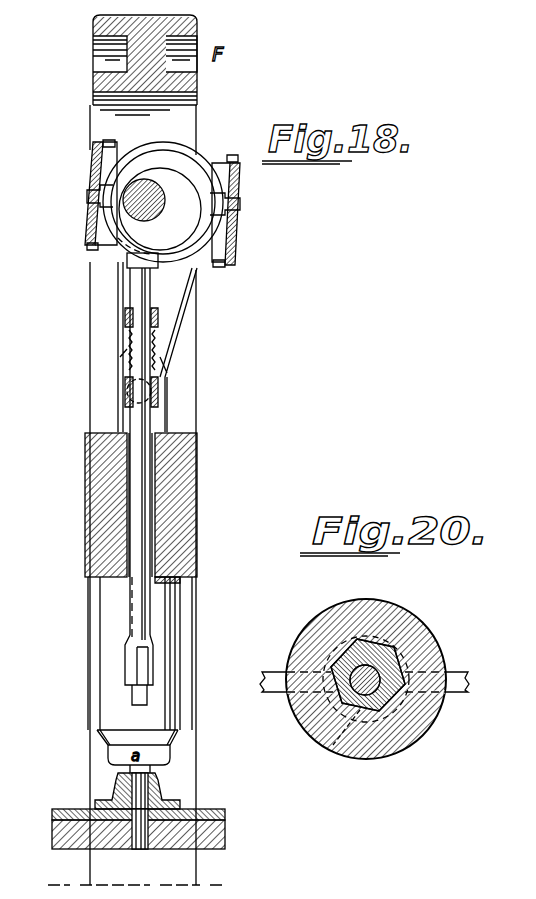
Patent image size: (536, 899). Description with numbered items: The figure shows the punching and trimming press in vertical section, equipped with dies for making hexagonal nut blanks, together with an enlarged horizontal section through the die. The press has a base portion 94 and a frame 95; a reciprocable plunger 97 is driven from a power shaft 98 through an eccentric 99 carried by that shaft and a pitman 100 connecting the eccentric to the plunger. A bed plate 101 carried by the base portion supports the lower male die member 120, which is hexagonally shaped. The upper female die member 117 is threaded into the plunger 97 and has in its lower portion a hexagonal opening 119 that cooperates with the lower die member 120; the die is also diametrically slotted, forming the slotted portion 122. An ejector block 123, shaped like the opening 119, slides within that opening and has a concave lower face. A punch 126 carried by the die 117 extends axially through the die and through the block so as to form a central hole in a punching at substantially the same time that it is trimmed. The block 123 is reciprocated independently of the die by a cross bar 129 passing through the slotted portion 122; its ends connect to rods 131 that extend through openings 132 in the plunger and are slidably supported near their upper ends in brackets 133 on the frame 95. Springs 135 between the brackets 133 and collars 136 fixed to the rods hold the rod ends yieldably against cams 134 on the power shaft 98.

In FIG. 18, the base portion 94 is at (205, 845).
In FIG. 18, the frame 95 is at (185, 384).
In FIG. 18, the reciprocable plunger 97 is at (183, 470).
In FIG. 18, the power shaft 98 is at (130, 212).
In FIG. 18, the eccentric 99 is at (205, 190).
In FIG. 18, the pitman 100 is at (173, 315).
In FIG. 18, the bed plate 101 is at (226, 818).
In FIG. 18, the upper female die member 117 is at (168, 715).
In FIG. 20, the upper female die member 117 is at (413, 722).
In FIG. 20, the hexagonal opening 119 is at (393, 652).
In FIG. 18, the lower male die member 120 is at (160, 793).
In FIG. 18, the slotted portion 122 is at (128, 625).
In FIG. 20, the ejector block 123 is at (353, 715).
In FIG. 20, the punch 126 is at (372, 686).
In FIG. 18, the cross bar 129 is at (138, 662).
In FIG. 20, the cross bar 129 is at (382, 670).
In FIG. 18, the rods 131 is at (137, 525).
In FIG. 18, the openings 132 is at (130, 497).
In FIG. 18, the brackets 133 is at (128, 398).
In FIG. 18, the cams 134 is at (178, 228).
In FIG. 18, the springs 135 is at (122, 345).
In FIG. 18, the collars 136 is at (125, 322).